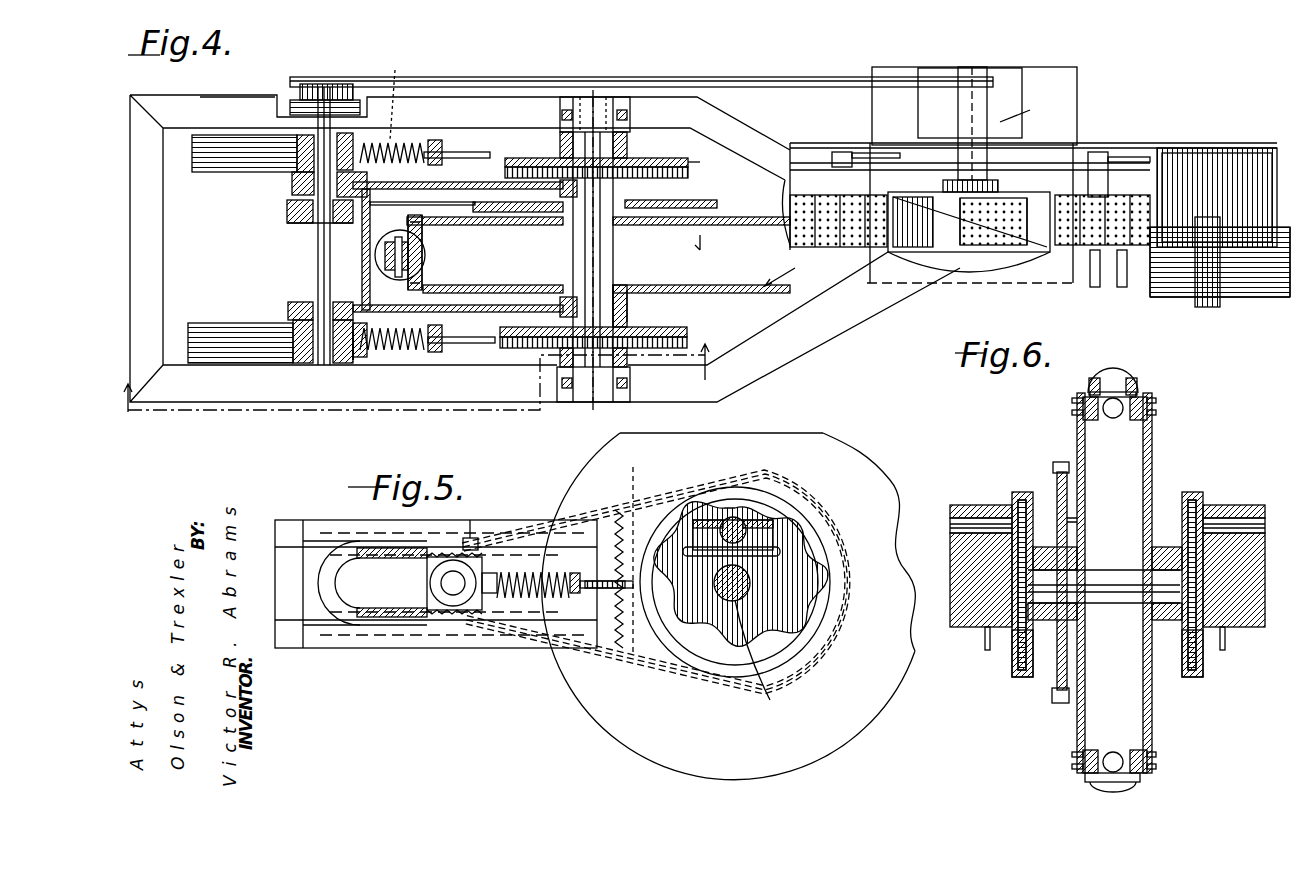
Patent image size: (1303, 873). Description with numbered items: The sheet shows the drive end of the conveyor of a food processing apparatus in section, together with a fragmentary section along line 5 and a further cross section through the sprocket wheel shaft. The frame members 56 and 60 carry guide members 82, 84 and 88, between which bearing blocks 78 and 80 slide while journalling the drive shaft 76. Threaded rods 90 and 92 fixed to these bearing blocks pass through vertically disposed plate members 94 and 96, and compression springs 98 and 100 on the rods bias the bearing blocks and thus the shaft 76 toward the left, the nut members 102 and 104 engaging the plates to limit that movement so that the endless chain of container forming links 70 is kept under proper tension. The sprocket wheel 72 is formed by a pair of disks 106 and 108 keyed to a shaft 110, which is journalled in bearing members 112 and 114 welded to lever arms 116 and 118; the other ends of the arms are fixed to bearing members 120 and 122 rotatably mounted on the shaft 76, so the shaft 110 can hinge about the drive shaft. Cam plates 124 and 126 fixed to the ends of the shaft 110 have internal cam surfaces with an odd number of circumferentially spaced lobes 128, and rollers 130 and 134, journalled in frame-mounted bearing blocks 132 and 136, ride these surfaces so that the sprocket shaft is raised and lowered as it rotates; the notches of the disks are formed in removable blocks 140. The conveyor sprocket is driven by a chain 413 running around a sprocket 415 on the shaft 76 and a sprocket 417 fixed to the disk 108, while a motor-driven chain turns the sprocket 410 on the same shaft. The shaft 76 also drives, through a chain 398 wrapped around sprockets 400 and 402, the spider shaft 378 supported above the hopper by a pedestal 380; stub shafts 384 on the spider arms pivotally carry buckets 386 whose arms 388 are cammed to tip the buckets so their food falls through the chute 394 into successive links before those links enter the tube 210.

In FIG. 4, the section line 5— 5 is at (421, 390).
In FIG. 4, the frame member 56 is at (272, 392).
In FIG. 5, the frame member 56 is at (320, 522).
In FIG. 4, the frame member 60 is at (210, 96).
In FIG. 6, the container forming links 70 is at (1146, 374).
In FIG. 4, the sprocket wheel 72 is at (796, 273).
In FIG. 4, the drive shaft 76 is at (318, 240).
In FIG. 5, the drive shaft 76 is at (452, 592).
In FIG. 4, the bearing block 78 is at (292, 326).
In FIG. 4, the bearing block 80 is at (296, 150).
In FIG. 5, the guide member 82 is at (380, 566).
In FIG. 4, the guide member 84 is at (205, 330).
In FIG. 5, the guide member 84 is at (358, 620).
In FIG. 4, the guide member 88 is at (210, 158).
In FIG. 4, the threaded rod 90 is at (466, 343).
In FIG. 5, the threaded rod 90 is at (600, 592).
In FIG. 4, the threaded rod 92 is at (482, 160).
In FIG. 4, the plate member 94 is at (428, 362).
In FIG. 4, the plate member 96 is at (408, 143).
In FIG. 4, the compression spring 98 is at (376, 352).
In FIG. 5, the compression spring 98 is at (525, 600).
In FIG. 4, the compression spring 100 is at (363, 66).
In FIG. 4, the nut member 102 is at (438, 352).
In FIG. 5, the nut member 102 is at (572, 594).
In FIG. 4, the nut member 104 is at (440, 152).
In FIG. 4, the disk 106 is at (648, 285).
In FIG. 5, the disk 106 is at (850, 700).
In FIG. 6, the disk 106 is at (1152, 450).
In FIG. 4, the disk 108 is at (676, 226).
In FIG. 6, the disk 108 is at (1078, 440).
In FIG. 4, the shaft 110 is at (573, 243).
In FIG. 5, the shaft 110 is at (770, 700).
In FIG. 4, the bearing member 112 is at (620, 310).
In FIG. 4, the bearing member 114 is at (716, 204).
In FIG. 4, the lever arm 116 is at (490, 305).
In FIG. 4, the lever arm 118 is at (470, 178).
In FIG. 4, the bearing member 120 is at (298, 302).
In FIG. 4, the bearing member 122 is at (287, 207).
In FIG. 4, the cam plate 124 is at (672, 326).
In FIG. 5, the cam plate 124 is at (787, 645).
In FIG. 6, the cam plate 124 is at (1192, 678).
In FIG. 4, the cam plate 126 is at (688, 168).
In FIG. 6, the cam plate 126 is at (1022, 678).
In FIG. 5, the lobes 128 is at (750, 583).
In FIG. 4, the roller 130 is at (640, 352).
In FIG. 5, the roller 130 is at (745, 520).
In FIG. 6, the roller 130 is at (1196, 500).
In FIG. 4, the bearing block 132 is at (568, 402).
In FIG. 5, the bearing block 132 is at (725, 520).
In FIG. 6, the bearing block 132 is at (1240, 505).
In FIG. 4, the roller 134 is at (628, 160).
In FIG. 6, the roller 134 is at (1022, 492).
In FIG. 4, the bearing block 136 is at (630, 120).
In FIG. 6, the bearing block 136 is at (980, 505).
In FIG. 4, the blocks 140 is at (424, 245).
In FIG. 4, the tube 210 is at (1262, 290).
In FIG. 4, the shaft 378 is at (1020, 90).
In FIG. 4, the pedestal 380 is at (1005, 112).
In FIG. 4, the stub shaft 384 is at (1120, 200).
In FIG. 4, the bucket 386 is at (1170, 210).
In FIG. 4, the arm 388 is at (885, 150).
In FIG. 4, the chute 394 is at (935, 258).
In FIG. 4, the chain 398 is at (578, 76).
In FIG. 4, the sprocket 400 is at (320, 83).
In FIG. 4, the sprocket 402 is at (990, 78).
In FIG. 4, the sprocket 410 is at (290, 104).
In FIG. 5, the chain 413 is at (577, 500).
In FIG. 4, the sprocket 415 is at (287, 222).
In FIG. 5, the sprocket 415 is at (470, 538).
In FIG. 4, the sprocket 417 is at (720, 240).
In FIG. 5, the sprocket 417 is at (648, 462).
In FIG. 6, the sprocket 417 is at (1067, 487).